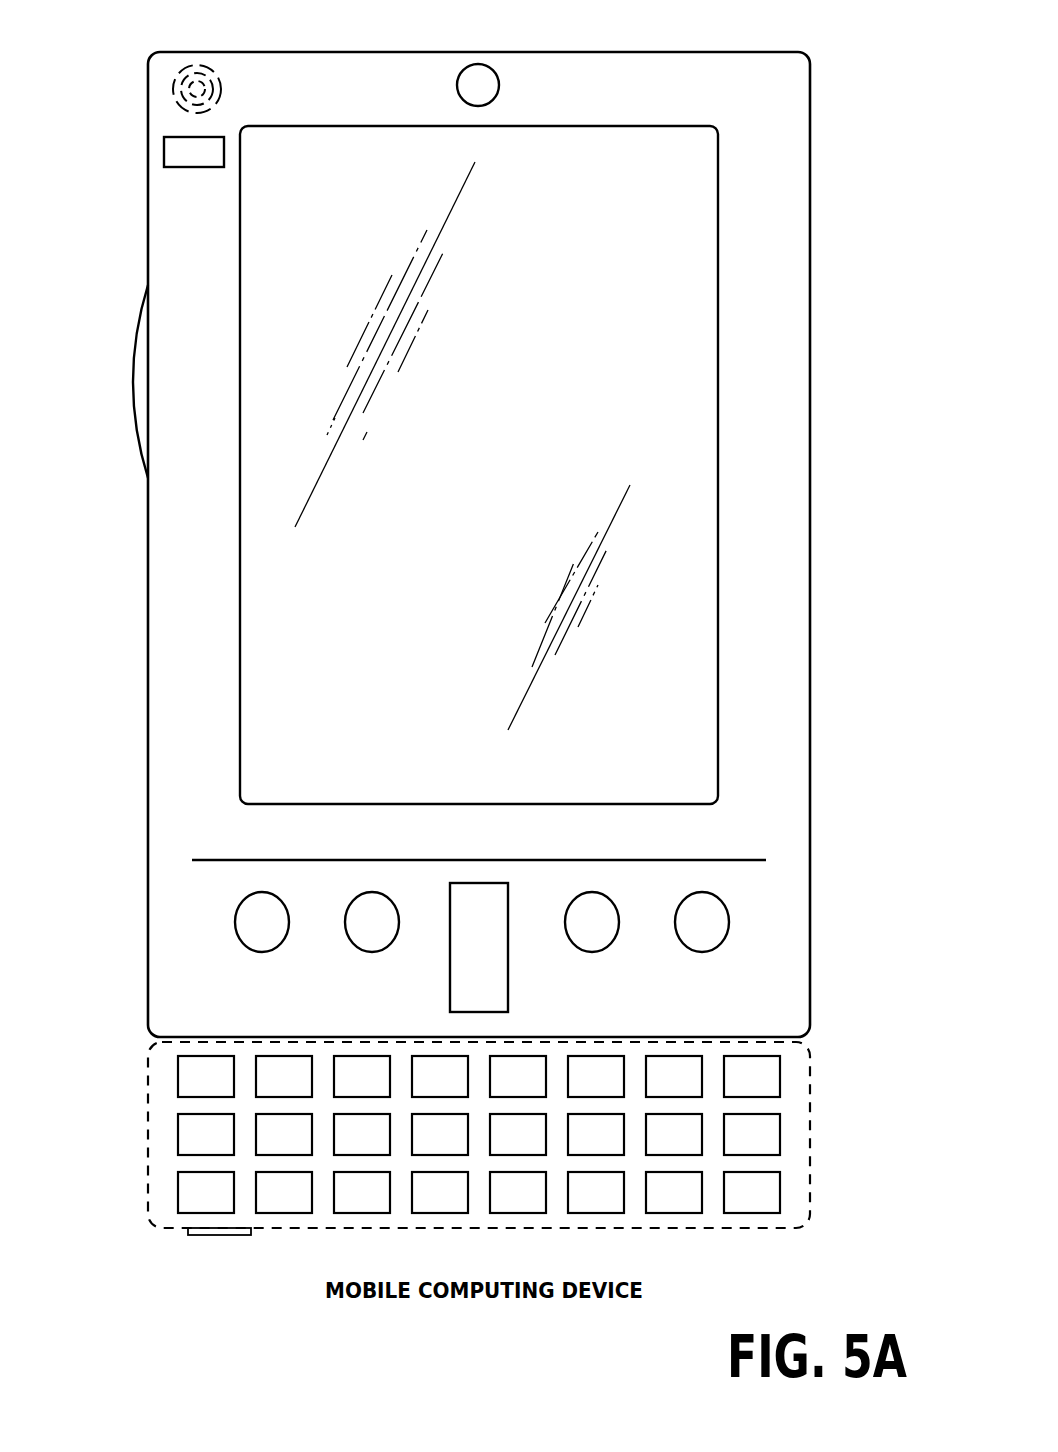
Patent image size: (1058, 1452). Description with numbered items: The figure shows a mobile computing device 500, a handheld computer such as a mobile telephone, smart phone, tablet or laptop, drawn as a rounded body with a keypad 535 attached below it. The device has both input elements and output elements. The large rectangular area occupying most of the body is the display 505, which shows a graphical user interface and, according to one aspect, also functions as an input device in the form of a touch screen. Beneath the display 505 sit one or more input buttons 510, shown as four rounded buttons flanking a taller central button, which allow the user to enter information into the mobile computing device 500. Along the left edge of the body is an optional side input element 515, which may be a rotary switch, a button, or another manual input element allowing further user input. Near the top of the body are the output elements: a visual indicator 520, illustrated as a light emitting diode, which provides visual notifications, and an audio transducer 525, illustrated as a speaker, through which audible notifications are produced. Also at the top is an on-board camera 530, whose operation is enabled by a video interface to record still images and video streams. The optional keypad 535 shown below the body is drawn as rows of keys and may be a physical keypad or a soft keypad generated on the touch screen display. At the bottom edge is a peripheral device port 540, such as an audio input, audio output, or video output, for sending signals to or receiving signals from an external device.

The mobile computing device 500 is at (775, 52).
The display 505 is at (263, 636).
The input buttons 510 is at (262, 952).
The side input element 515 is at (125, 385).
The visual indicator 520 is at (164, 150).
The audio transducer 525 is at (172, 90).
The on-board camera 530 is at (480, 64).
The keypad 535 is at (160, 1135).
The peripheral device port 540 is at (198, 1234).